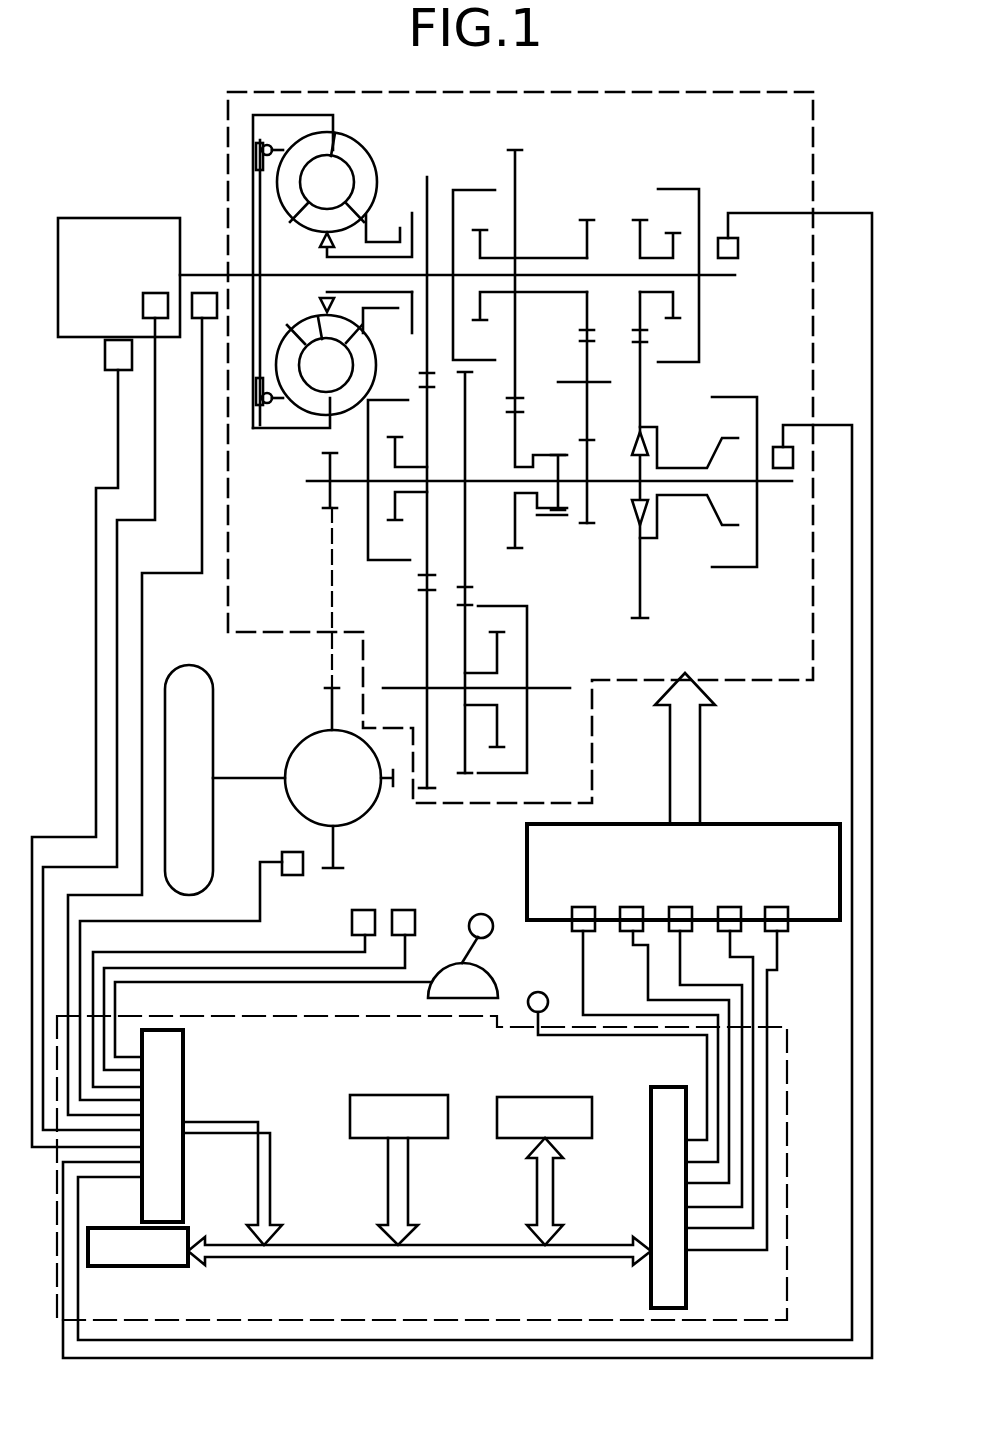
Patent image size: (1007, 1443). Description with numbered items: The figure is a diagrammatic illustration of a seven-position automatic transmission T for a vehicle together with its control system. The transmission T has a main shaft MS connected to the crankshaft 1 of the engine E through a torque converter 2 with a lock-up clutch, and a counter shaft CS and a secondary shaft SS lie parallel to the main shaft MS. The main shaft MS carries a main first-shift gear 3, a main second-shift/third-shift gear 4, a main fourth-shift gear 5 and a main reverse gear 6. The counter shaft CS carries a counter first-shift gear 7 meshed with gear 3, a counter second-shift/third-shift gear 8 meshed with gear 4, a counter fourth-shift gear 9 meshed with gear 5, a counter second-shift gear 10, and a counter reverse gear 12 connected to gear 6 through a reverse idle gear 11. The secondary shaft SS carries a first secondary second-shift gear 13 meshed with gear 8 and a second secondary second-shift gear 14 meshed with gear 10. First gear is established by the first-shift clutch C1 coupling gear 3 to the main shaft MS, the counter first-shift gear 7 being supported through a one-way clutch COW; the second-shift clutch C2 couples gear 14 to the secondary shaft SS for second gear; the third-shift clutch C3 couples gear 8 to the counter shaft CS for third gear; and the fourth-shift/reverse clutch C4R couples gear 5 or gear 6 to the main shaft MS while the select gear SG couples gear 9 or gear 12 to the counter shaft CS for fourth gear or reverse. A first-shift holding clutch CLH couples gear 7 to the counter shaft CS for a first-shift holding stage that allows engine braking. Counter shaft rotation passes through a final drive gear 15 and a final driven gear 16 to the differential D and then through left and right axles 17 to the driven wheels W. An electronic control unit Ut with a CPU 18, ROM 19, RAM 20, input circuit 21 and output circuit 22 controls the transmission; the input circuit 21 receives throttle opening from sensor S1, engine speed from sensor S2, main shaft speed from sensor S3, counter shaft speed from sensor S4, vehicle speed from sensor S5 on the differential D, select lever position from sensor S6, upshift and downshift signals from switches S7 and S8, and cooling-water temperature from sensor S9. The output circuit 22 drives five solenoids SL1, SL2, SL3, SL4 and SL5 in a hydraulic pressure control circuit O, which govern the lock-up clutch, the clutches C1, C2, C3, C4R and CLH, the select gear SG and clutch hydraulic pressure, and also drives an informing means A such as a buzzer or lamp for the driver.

The crankshaft 1 is at (205, 270).
The torque converter 2 is at (373, 168).
The main first-shift gear 3 is at (640, 220).
The main second-shift/third-shift gear 4 is at (428, 177).
The main fourth-shift gear 5 is at (517, 150).
The main reverse gear 6 is at (587, 220).
The counter first-shift gear 7 is at (640, 622).
The counter second-shift/third-shift gear 8 is at (424, 582).
The counter fourth-shift gear 9 is at (518, 550).
The counter second-shift gear 10 is at (468, 374).
The reverse idle gear 11 is at (586, 338).
The counter reverse gear 12 is at (588, 526).
The first secondary second-shift gear 13 is at (430, 790).
The second secondary second-shift gear 14 is at (466, 776).
The final drive gear 15 is at (330, 510).
The final driven gear 16 is at (332, 688).
The axle 17 is at (258, 778).
The CPU 18 is at (165, 1268).
The ROM 19 is at (390, 1095).
The RAM 20 is at (551, 1097).
The input circuit 21 is at (185, 1080).
The output circuit 22 is at (650, 1193).
The engine E is at (158, 218).
The automatic transmission T is at (247, 640).
The differential D is at (298, 806).
The driven wheel W is at (188, 665).
The hydraulic pressure control circuit O is at (770, 824).
The informing means A is at (530, 1012).
The electronic control unit Ut is at (787, 1105).
The main shaft MS is at (722, 280).
The secondary shaft SS is at (557, 686).
The select gear SG is at (550, 450).
The counter shaft CS is at (778, 486).
The one-way clutch COW is at (650, 444).
The first-shift holding clutch CLH is at (728, 570).
The first-shift clutch C1 is at (678, 189).
The second-shift clutch C2 is at (502, 606).
The third-shift clutch C3 is at (400, 400).
The fourth-shift/reverse clutch C4R is at (473, 193).
The throttle opening degree sensor S1 is at (105, 358).
The engine revolution-number sensor S2 is at (198, 318).
The main shaft revolution-number sensor S3 is at (738, 248).
The counter shaft revolution-number sensor S4 is at (782, 446).
The vehicle speed sensor S5 is at (294, 875).
The select lever position sensor S6 is at (482, 978).
The upshifting switch S7 is at (364, 910).
The downshifting switch S8 is at (406, 910).
The water temperature sensor S9 is at (143, 305).
The solenoid SL1 is at (574, 929).
The solenoid SL2 is at (630, 933).
The solenoid SL3 is at (680, 925).
The solenoid SL4 is at (740, 925).
The solenoid SL5 is at (783, 930).